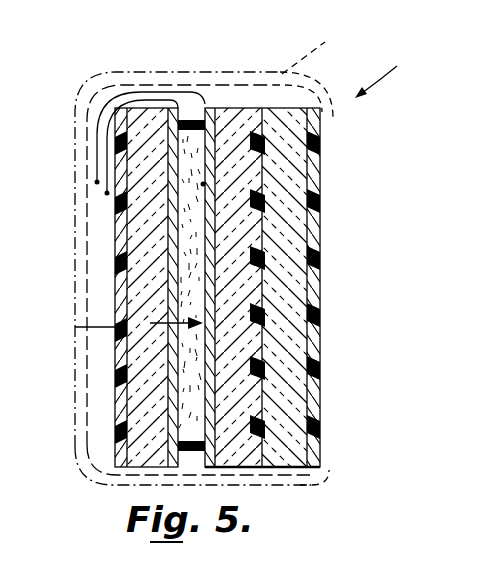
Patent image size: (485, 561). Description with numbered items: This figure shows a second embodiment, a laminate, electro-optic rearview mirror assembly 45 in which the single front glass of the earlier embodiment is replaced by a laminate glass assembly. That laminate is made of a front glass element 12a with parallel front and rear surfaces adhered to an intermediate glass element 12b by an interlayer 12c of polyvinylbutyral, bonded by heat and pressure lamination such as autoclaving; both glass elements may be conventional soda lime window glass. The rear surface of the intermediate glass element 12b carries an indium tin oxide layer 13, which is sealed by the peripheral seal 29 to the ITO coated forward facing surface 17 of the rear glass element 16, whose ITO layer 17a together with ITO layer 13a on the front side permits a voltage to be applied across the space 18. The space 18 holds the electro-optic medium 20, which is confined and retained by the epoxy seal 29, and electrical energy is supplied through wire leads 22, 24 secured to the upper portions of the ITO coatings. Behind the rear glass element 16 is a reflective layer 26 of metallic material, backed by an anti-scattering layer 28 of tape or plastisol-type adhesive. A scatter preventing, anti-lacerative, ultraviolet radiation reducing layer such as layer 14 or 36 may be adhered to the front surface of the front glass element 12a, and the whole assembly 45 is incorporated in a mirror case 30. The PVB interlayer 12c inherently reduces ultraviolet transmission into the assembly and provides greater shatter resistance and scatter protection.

The front glass element 12a is at (290, 229).
The intermediate glass element 12b is at (242, 352).
The interlayer 12c is at (270, 287).
The indium tin oxide layer 13 is at (203, 184).
The ITO layer 13a is at (270, 253).
The scatter preventing, anti-lacerative layer 14 is at (320, 162).
The UV radiation reducing layer 36 is at (331, 287).
The rear glass element 16 is at (115, 278).
The forward facing surface 17 is at (120, 204).
The ITO layer 17a is at (120, 230).
The space 18 is at (78, 327).
The electro-optic medium 20 is at (193, 378).
The wire lead 22 is at (97, 143).
The wire lead 24 is at (97, 176).
The reflective layer 26 is at (100, 100).
The anti-scattering layer 28 is at (107, 118).
The peripheral seal 29 is at (190, 120).
The mirror case 30 is at (318, 52).
The laminate, electro-optic rearview mirror assembly 45 is at (387, 72).